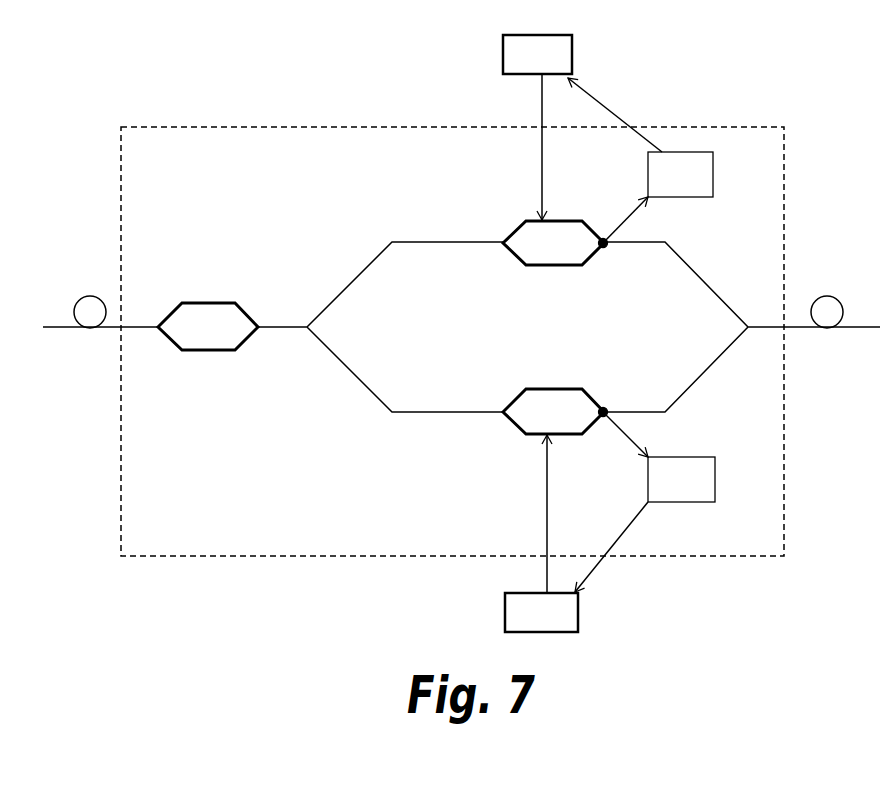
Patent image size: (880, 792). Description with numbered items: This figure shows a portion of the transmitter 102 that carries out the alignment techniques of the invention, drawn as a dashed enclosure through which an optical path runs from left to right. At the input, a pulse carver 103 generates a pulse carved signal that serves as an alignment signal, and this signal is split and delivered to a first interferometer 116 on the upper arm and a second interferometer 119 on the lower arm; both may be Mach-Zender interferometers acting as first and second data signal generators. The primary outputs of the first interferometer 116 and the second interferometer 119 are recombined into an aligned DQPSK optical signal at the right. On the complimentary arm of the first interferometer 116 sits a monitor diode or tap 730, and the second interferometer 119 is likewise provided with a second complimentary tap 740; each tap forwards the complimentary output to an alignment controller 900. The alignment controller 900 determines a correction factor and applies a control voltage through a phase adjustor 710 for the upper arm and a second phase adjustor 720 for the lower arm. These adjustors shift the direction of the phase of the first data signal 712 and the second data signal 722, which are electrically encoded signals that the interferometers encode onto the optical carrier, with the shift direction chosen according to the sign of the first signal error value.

The transmitter 102 is at (452, 367).
The pulse carver 103 is at (208, 313).
The first interferometer 116 is at (553, 258).
The second interferometer 119 is at (553, 399).
The phase adjustor 710 is at (537, 54).
The first data signal 712 is at (516, 147).
The second phase adjustor 720 is at (541, 612).
The second data signal 722 is at (518, 514).
The monitor diode or tap 730 is at (607, 243).
The second complimentary tap 740 is at (610, 411).
The alignment controller 900 is at (641, 335).